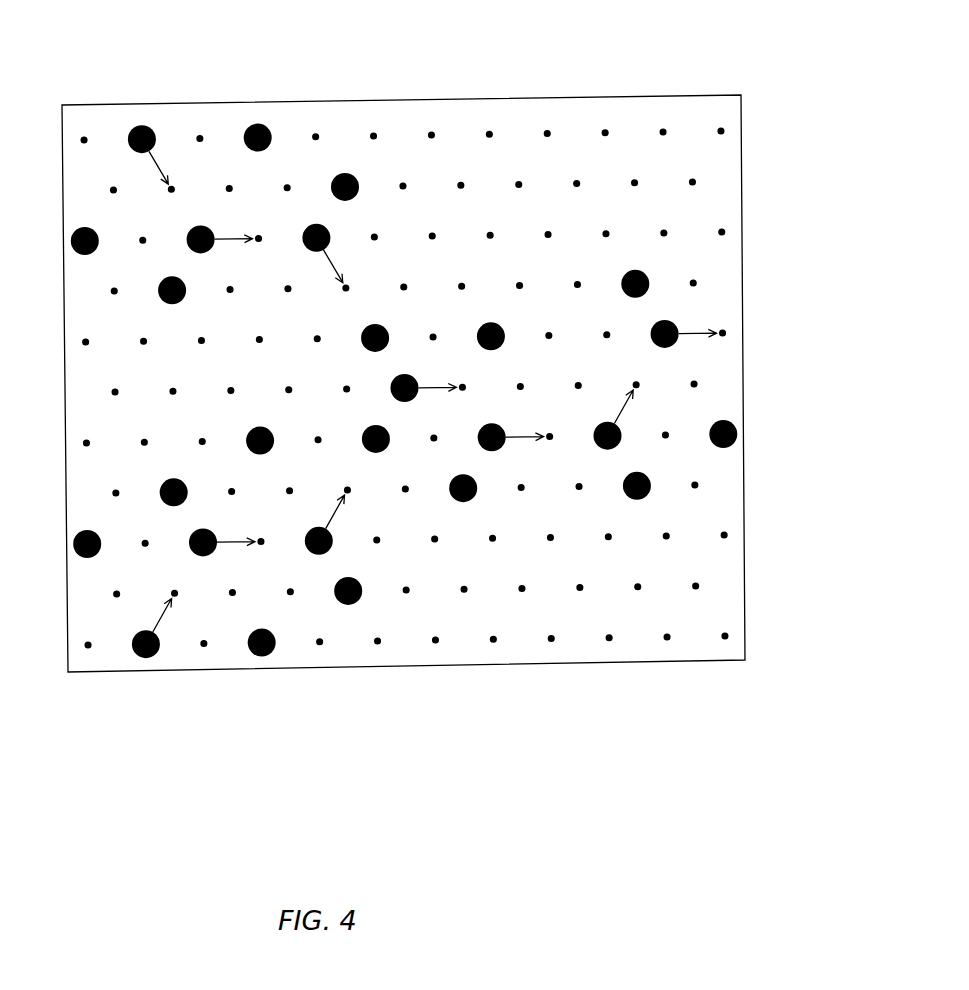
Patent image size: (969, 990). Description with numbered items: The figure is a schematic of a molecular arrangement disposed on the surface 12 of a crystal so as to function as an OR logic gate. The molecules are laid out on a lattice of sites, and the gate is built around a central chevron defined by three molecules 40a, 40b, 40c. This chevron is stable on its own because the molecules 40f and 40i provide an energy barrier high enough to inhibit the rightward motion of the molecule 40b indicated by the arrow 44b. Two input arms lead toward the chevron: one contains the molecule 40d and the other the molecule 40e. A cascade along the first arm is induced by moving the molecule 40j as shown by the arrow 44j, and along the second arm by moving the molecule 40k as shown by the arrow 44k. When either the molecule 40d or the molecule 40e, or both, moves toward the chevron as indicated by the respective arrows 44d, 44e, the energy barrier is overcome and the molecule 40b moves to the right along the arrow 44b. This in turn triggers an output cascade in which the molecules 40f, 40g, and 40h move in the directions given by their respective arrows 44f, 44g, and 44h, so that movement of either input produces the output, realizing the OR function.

The surface 12 is at (115, 417).
The molecule 40a is at (383, 325).
The molecule 40b is at (403, 379).
The molecule 40c is at (368, 453).
The molecule 40d is at (317, 225).
The molecule 40e is at (315, 555).
The molecule 40f is at (477, 443).
The molecule 40g is at (613, 443).
The molecule 40h is at (675, 347).
The molecule 40i is at (500, 328).
The molecule 40j is at (153, 127).
The molecule 40k is at (148, 658).
The arrow 44b is at (435, 385).
The arrow 44d is at (338, 262).
The arrow 44e is at (330, 518).
The arrow 44f is at (515, 437).
The arrow 44g is at (620, 412).
The arrow 44h is at (688, 331).
The arrow 44j is at (158, 163).
The arrow 44k is at (158, 615).